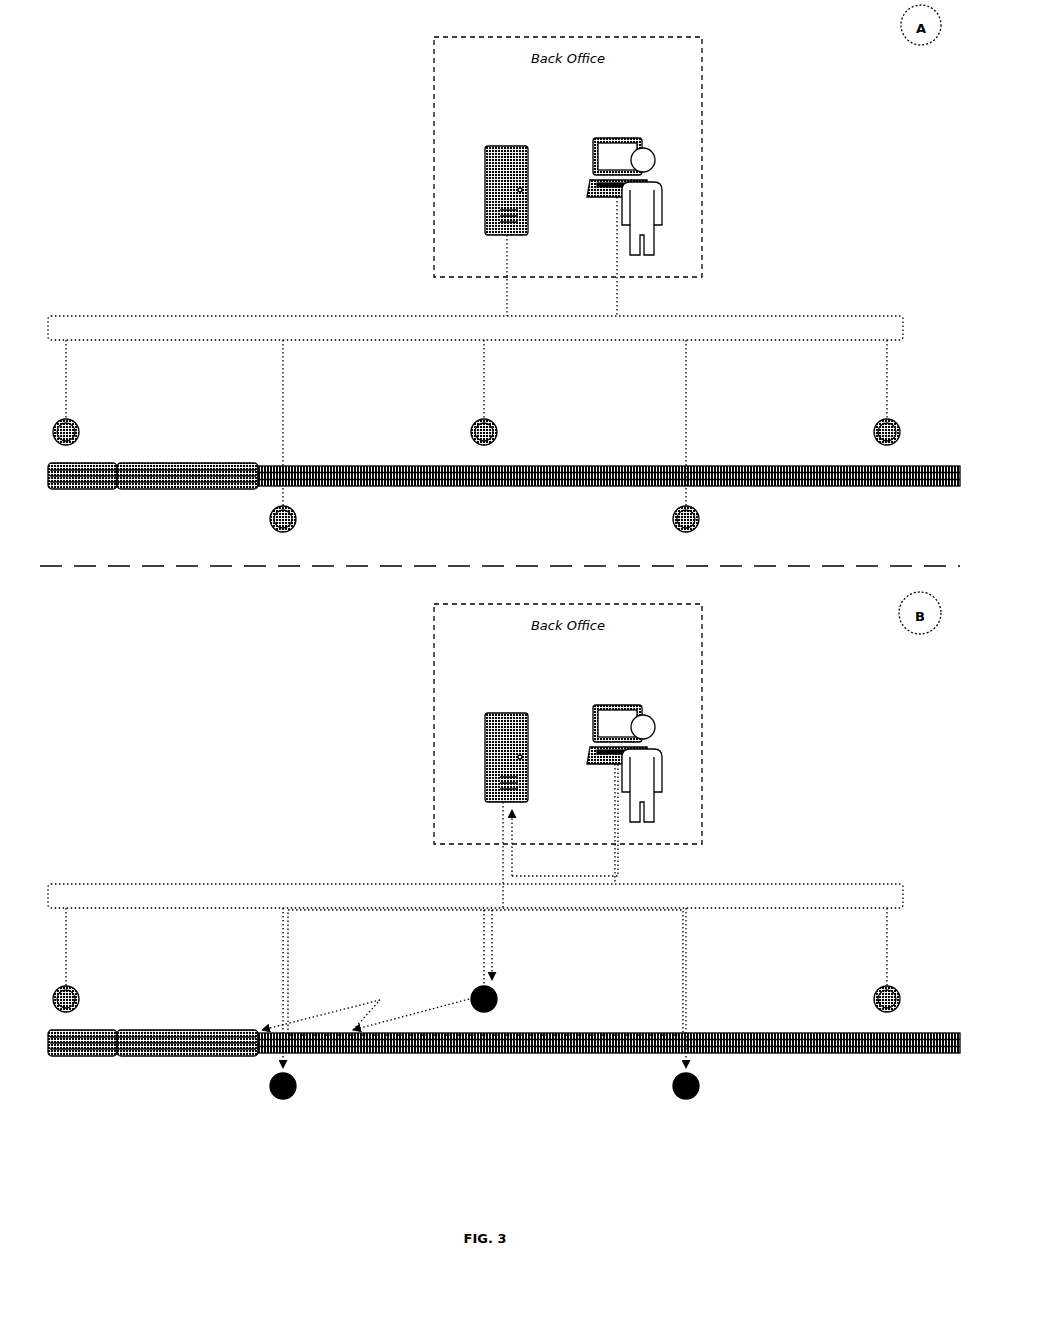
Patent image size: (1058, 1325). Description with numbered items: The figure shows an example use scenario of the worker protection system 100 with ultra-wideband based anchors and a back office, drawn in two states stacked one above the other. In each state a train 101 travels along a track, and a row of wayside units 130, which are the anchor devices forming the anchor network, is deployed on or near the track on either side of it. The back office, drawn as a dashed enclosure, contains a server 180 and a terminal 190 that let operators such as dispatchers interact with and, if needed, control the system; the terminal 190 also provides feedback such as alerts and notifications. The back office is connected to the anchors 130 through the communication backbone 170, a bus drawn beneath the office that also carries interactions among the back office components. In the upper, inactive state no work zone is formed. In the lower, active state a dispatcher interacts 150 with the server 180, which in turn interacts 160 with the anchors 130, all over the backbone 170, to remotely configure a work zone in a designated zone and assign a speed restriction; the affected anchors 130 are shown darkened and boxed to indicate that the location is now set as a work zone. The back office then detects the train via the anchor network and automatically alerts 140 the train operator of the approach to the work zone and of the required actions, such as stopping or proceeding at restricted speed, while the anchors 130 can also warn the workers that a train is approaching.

The worker protection system 100 is at (396, 489).
The train 101 is at (184, 491).
The wayside units 130 is at (469, 431).
The automatic alert 140 is at (367, 997).
The dispatcher interaction 150 is at (553, 873).
The server interaction with anchors 160 is at (530, 914).
The communication backbone 170 is at (475, 612).
The server 180 is at (506, 518).
The terminal 190 is at (624, 495).